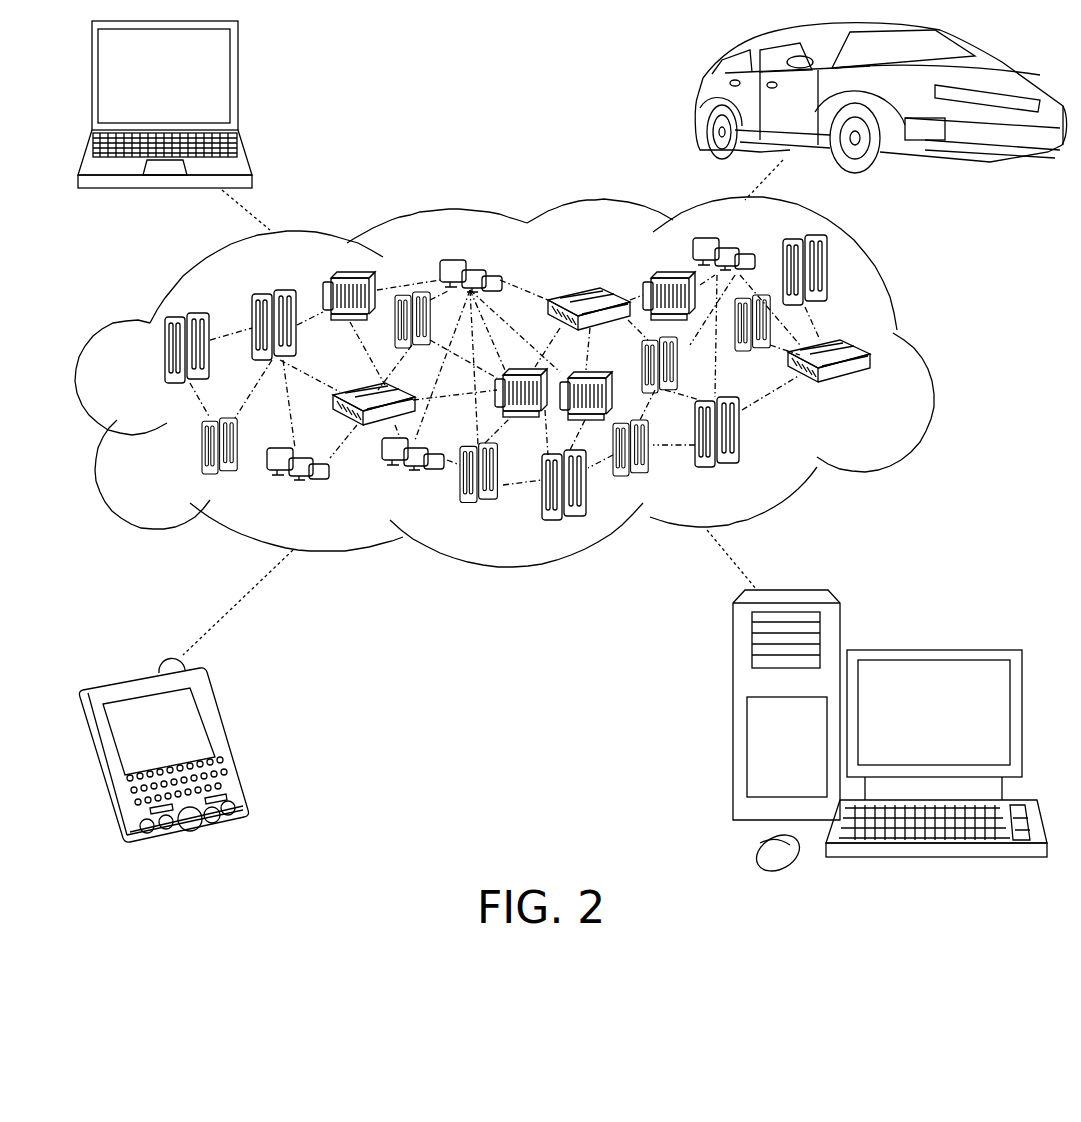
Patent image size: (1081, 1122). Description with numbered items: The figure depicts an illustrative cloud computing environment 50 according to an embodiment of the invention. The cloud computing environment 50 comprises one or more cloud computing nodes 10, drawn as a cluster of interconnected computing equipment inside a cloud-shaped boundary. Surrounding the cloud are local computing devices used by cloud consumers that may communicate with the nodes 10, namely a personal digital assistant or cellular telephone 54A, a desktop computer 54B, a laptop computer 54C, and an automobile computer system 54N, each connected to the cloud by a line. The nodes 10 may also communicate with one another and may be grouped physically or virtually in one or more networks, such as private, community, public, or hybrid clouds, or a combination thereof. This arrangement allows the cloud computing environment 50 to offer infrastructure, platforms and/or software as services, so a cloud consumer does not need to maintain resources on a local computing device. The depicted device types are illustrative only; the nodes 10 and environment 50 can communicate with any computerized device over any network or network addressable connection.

The cloud computing node 10 is at (880, 390).
The cloud computing environment 50 is at (935, 359).
The personal digital assistant or cellular telephone 54A is at (228, 742).
The desktop computer 54B is at (930, 650).
The laptop computer 54C is at (237, 83).
The automobile computer system 54N is at (700, 100).